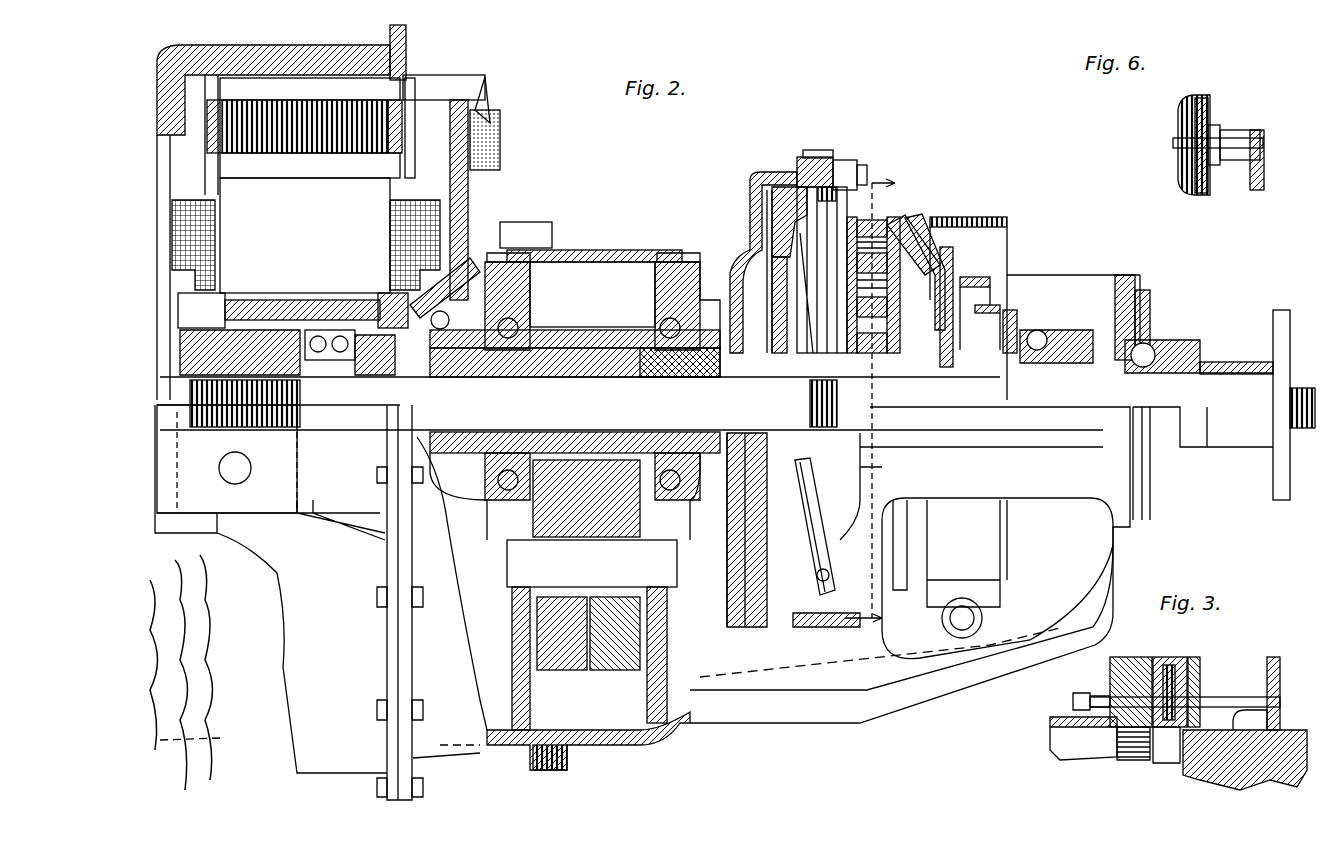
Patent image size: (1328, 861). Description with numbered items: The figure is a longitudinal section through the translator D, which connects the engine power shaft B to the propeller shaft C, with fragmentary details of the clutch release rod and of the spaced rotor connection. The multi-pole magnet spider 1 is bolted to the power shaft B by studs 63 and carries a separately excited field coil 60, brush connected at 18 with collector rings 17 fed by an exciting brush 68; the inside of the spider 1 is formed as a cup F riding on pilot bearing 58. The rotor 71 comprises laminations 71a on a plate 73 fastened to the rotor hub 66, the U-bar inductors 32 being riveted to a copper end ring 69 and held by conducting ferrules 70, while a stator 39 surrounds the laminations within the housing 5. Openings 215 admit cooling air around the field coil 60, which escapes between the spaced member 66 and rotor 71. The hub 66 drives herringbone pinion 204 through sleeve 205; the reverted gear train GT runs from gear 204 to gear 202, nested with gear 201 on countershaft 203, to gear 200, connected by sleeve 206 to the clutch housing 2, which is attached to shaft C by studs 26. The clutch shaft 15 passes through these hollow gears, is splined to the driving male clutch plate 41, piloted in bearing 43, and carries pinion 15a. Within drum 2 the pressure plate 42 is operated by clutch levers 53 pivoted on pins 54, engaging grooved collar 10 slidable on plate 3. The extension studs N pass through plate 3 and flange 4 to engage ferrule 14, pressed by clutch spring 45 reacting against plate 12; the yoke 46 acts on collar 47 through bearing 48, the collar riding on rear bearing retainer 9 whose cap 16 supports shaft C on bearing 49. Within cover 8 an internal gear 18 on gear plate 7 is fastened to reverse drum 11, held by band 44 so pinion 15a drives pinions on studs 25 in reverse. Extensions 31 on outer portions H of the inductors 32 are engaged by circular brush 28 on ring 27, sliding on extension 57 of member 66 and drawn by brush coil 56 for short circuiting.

In FIG. 2, the magnet spider 1 is at (301, 238).
In FIG. 2, the clutch housing 2 is at (753, 183).
In FIG. 2, the plate 3 is at (847, 287).
In FIG. 3, the plate 3 is at (1112, 672).
In FIG. 2, the flange 4 is at (975, 365).
In FIG. 3, the flange 4 is at (1170, 665).
In FIG. 2, the housing 5 is at (175, 63).
In FIG. 2, the gear plate 7 is at (925, 272).
In FIG. 2, the reverse gear box cover 8 is at (887, 232).
In FIG. 2, the rear bearing retainer 9 is at (1112, 365).
In FIG. 2, the grooved collar 10 is at (876, 404).
In FIG. 3, the grooved collar 10 is at (1100, 697).
In FIG. 2, the reverse operating drum 11 is at (1005, 237).
In FIG. 2, the plate 12 is at (953, 270).
In FIG. 3, the plate 12 is at (1200, 670).
In FIG. 2, the ferrule 14 is at (1017, 320).
In FIG. 3, the ferrule 14 is at (1281, 685).
In FIG. 2, the clutch shaft 15 is at (631, 412).
In FIG. 2, the pinion 15a is at (850, 415).
In FIG. 2, the cap 16 is at (1150, 335).
In FIG. 2, the exciting current collector rings 17 is at (495, 165).
In FIG. 2, the brush connection / internal gear 18 is at (450, 205).
In FIG. 2, the studs 25 is at (873, 285).
In FIG. 2, the studs 26 is at (845, 165).
In FIG. 2, the movable circular ring 27 is at (498, 138).
In FIG. 2, the circular brush 28 is at (490, 118).
In FIG. 2, the extensions 31 is at (468, 83).
In FIG. 2, the inductors 32 is at (302, 135).
In FIG. 2, the stator 39 is at (245, 50).
In FIG. 2, the driving male clutch plate 41 is at (767, 283).
In FIG. 2, the clutch pressure plate 42 is at (790, 240).
In FIG. 2, the bearing 43 is at (943, 370).
In FIG. 3, the bearing 43 is at (1162, 765).
In FIG. 2, the reverse band 44 is at (975, 218).
In FIG. 2, the clutch spring 45 is at (1000, 285).
In FIG. 2, the clutch operating yoke 46 is at (1078, 365).
In FIG. 2, the collar 47 is at (1065, 335).
In FIG. 2, the bearing 48 is at (1037, 365).
In FIG. 2, the bearing 49 is at (1150, 373).
In FIG. 2, the clutch levers 53 is at (828, 515).
In FIG. 2, the pins 54 is at (795, 530).
In FIG. 2, the circular brush coil 56 is at (508, 180).
In FIG. 2, the extension 57 is at (505, 165).
In FIG. 2, the bearing 58 is at (318, 362).
In FIG. 2, the field coil 60 is at (208, 240).
In FIG. 2, the studs 63 is at (350, 300).
In FIG. 2, the rotor hub 66 is at (450, 148).
In FIG. 6, the rotor hub 66 is at (1260, 180).
In FIG. 2, the exciting brush 68 is at (545, 232).
In FIG. 2, the copper end ring 69 is at (210, 140).
In FIG. 2, the conducting ferrule 70 is at (460, 75).
In FIG. 2, the rotor 71 is at (505, 150).
In FIG. 6, the rotor 71 is at (1265, 168).
In FIG. 2, the laminations 71a is at (218, 125).
In FIG. 6, the laminations 71a is at (1180, 115).
In FIG. 2, the plate 73 is at (403, 125).
In FIG. 6, the plate 73 is at (1210, 108).
In FIG. 2, the gear 200 is at (628, 330).
In FIG. 2, the gear 201 is at (625, 670).
In FIG. 2, the gear 202 is at (555, 670).
In FIG. 2, the countershaft 203 is at (565, 520).
In FIG. 2, the herringbone pinion 204 is at (560, 380).
In FIG. 2, the sleeve 205 is at (445, 380).
In FIG. 2, the sleeve 206 is at (672, 380).
In FIG. 2, the openings 215 is at (448, 293).
In FIG. 2, the power shaft B is at (192, 368).
In FIG. 2, the propeller shaft C is at (1305, 385).
In FIG. 3, the propeller shaft C is at (1178, 760).
In FIG. 2, the translator D is at (791, 143).
In FIG. 2, the cup F is at (262, 405).
In FIG. 2, the generator G is at (272, 180).
In FIG. 2, the gear train GT is at (592, 698).
In FIG. 2, the outer portions H is at (431, 88).
In FIG. 3, the extension studs N is at (1220, 697).